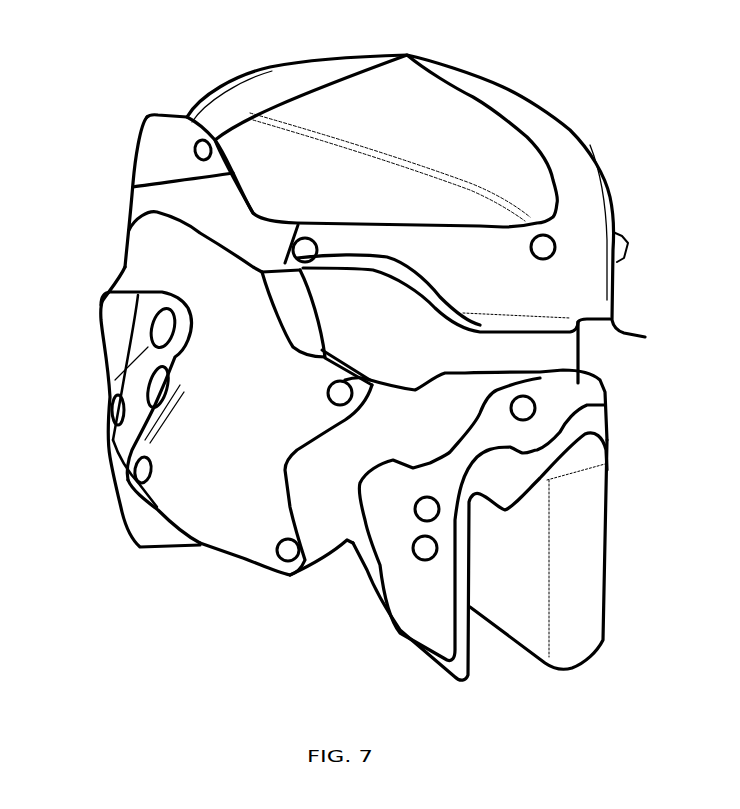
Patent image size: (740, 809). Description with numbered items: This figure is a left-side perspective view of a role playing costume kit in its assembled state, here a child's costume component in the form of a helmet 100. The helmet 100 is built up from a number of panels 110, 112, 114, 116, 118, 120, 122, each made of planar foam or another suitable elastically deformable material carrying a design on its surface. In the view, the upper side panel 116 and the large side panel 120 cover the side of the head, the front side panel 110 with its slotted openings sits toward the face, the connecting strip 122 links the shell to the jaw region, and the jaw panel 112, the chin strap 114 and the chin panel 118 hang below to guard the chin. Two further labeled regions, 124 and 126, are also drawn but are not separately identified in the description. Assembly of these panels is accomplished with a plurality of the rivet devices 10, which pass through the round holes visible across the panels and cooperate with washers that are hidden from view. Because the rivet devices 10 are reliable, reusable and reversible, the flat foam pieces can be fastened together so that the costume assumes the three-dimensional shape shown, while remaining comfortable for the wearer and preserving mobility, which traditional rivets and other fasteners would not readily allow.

The costume component 100 is at (548, 62).
The rivet device 10 is at (200, 142).
The panel 110 is at (105, 377).
The panel 112 is at (423, 617).
The panel 114 is at (372, 565).
The panel 116 is at (175, 137).
The panel 118 is at (578, 619).
The panel 120 is at (250, 540).
The panel 122 is at (575, 347).
The lower sheath 124 is at (148, 527).
The visor band 126 is at (300, 72).